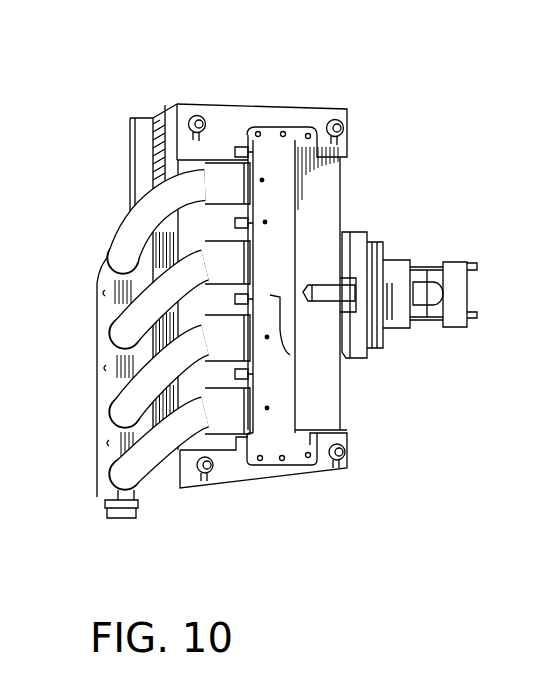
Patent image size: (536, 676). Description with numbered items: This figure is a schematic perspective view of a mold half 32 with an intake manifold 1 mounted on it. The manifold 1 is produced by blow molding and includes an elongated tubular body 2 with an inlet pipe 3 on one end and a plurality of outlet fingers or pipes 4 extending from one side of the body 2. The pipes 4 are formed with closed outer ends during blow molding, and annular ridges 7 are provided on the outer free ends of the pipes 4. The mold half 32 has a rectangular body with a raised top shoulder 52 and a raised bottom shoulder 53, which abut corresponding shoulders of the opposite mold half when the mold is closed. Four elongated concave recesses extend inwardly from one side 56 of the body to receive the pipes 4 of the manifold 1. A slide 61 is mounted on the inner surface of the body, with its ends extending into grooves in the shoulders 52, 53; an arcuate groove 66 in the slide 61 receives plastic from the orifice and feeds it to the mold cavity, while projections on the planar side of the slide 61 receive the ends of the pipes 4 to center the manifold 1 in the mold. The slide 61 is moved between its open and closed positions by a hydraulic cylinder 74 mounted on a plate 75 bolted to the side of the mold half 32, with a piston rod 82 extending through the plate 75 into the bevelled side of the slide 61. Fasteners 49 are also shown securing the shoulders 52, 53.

The intake manifold 1 is at (77, 300).
The elongated tubular body 2 is at (100, 383).
The inlet pipe 3 is at (117, 518).
The outlet fingers or pipes 4 is at (83, 232).
The annular ridges 7 is at (260, 188).
The mold half 32 is at (177, 103).
The bolts 49 is at (204, 116).
The top shoulder 52 is at (232, 118).
The bottom shoulder 53 is at (233, 470).
The side of the body 56 is at (158, 157).
The slide 61 is at (273, 247).
The arcuate groove 66 is at (341, 304).
The hydraulic cylinder 74 is at (440, 290).
The plate 75 is at (367, 353).
The piston rod 82 is at (310, 283).